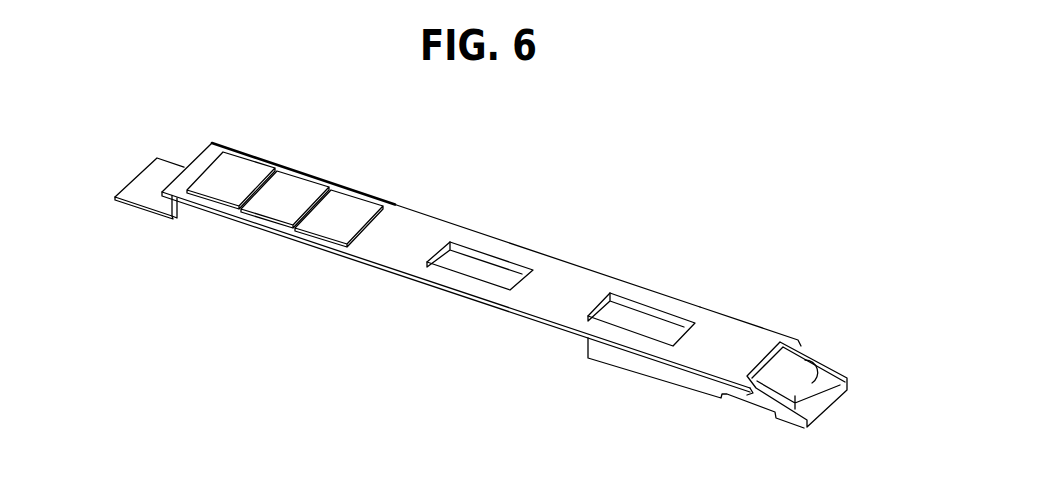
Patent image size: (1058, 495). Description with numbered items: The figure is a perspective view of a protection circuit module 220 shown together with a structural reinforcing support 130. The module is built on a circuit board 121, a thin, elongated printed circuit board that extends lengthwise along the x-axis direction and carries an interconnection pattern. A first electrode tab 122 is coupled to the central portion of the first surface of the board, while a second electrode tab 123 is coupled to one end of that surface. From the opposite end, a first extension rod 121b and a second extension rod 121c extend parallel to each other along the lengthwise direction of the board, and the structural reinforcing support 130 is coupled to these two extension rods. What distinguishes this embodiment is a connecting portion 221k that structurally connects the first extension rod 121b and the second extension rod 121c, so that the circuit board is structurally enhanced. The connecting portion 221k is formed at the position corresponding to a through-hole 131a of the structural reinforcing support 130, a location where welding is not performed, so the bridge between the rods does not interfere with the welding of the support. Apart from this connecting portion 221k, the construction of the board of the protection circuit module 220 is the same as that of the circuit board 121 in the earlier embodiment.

The circuit board 121 is at (423, 210).
The first extension rod 121b is at (635, 338).
The second extension rod 121c is at (636, 292).
The first electrode tab 122 is at (488, 268).
The second electrode tab 123 is at (141, 217).
The structural reinforcing support 130 is at (848, 365).
The through-hole 131a is at (806, 370).
The protection circuit module 220 is at (561, 233).
The connecting portion 221k is at (716, 342).